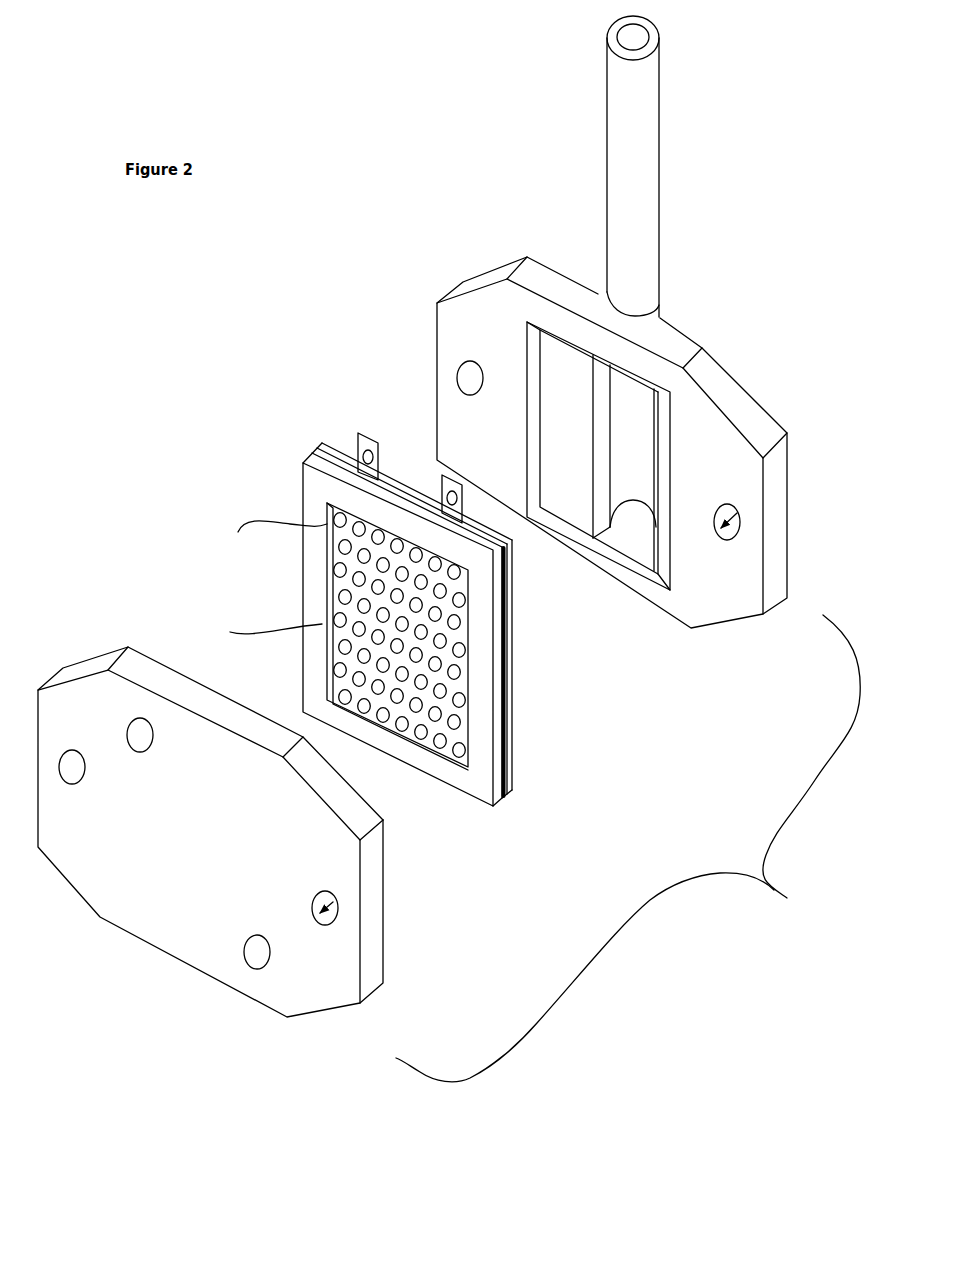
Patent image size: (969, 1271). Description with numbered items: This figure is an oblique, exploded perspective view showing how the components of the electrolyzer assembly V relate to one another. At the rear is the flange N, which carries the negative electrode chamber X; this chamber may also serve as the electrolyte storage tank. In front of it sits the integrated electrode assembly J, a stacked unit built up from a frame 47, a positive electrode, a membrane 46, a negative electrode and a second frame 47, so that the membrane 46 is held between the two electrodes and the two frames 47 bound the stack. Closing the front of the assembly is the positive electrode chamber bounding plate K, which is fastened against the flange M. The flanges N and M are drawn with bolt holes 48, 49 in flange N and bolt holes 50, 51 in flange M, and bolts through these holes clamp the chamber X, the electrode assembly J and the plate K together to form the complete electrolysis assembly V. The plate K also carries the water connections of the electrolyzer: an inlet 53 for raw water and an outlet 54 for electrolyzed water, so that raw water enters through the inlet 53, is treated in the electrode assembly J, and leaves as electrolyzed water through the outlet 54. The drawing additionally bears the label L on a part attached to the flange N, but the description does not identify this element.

The membrane 46 is at (505, 806).
The frame 47 is at (478, 780).
The bolt hole 48 is at (466, 378).
The bolt hole 49 is at (739, 518).
The bolt hole 50 is at (338, 906).
The bolt hole 51 is at (70, 766).
The inlet for raw water 53 is at (254, 954).
The outlet for electrolyzed water 54 is at (140, 735).
The outlet tube L is at (609, 143).
The flange N is at (439, 353).
The negative electrode chamber X is at (570, 477).
The integrated electrode assembly J is at (514, 727).
The positive electrode chamber bounding plate K is at (210, 843).
The flange M is at (136, 645).
The electrolyzer assembly V is at (628, 848).